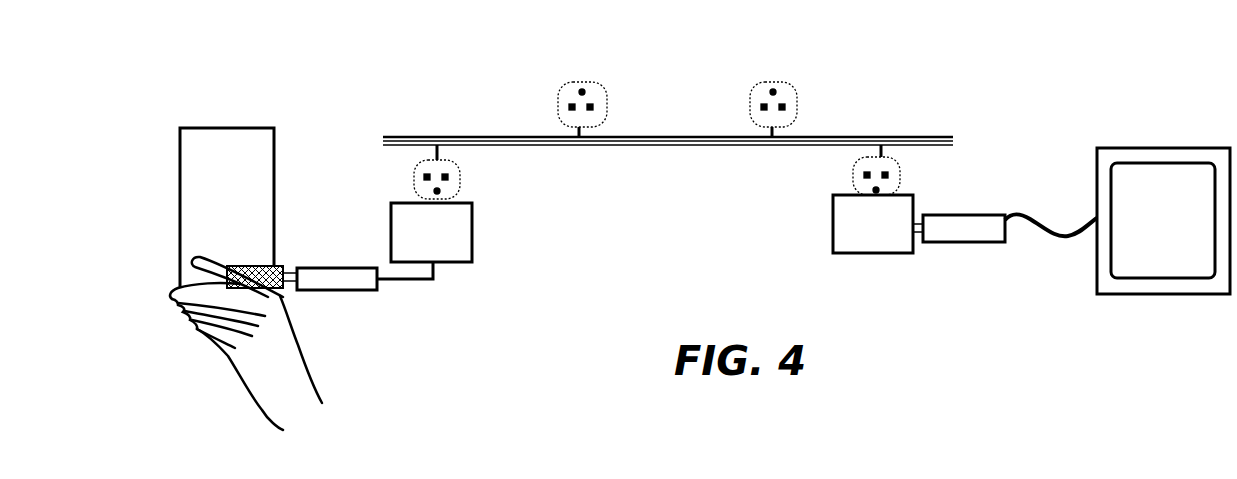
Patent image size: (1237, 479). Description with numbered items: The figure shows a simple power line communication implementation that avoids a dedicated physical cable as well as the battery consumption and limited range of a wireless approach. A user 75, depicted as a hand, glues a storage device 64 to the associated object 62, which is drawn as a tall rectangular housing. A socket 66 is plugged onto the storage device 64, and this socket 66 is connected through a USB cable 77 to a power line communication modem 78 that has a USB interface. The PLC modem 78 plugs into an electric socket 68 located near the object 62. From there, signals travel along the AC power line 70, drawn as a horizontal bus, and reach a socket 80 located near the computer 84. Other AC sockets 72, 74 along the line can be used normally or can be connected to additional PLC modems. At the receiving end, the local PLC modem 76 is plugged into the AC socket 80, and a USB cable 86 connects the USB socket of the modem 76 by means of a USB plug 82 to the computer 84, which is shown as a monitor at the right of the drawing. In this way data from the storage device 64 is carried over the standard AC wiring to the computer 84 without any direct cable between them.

The associated object 62 is at (275, 143).
The storage device 64 is at (227, 265).
The socket 66 is at (313, 267).
The electric socket 68 is at (458, 172).
The AC power line 70 is at (402, 138).
The AC socket 72 is at (593, 81).
The AC socket 74 is at (760, 83).
The user 75 is at (322, 382).
The local PLC modem 76 is at (832, 240).
The USB cable 77 is at (395, 282).
The power line communication modem 78 is at (473, 233).
The socket 80 is at (865, 156).
The USB plug 82 is at (960, 215).
The computer 84 is at (1095, 173).
The USB cable 86 is at (1068, 238).